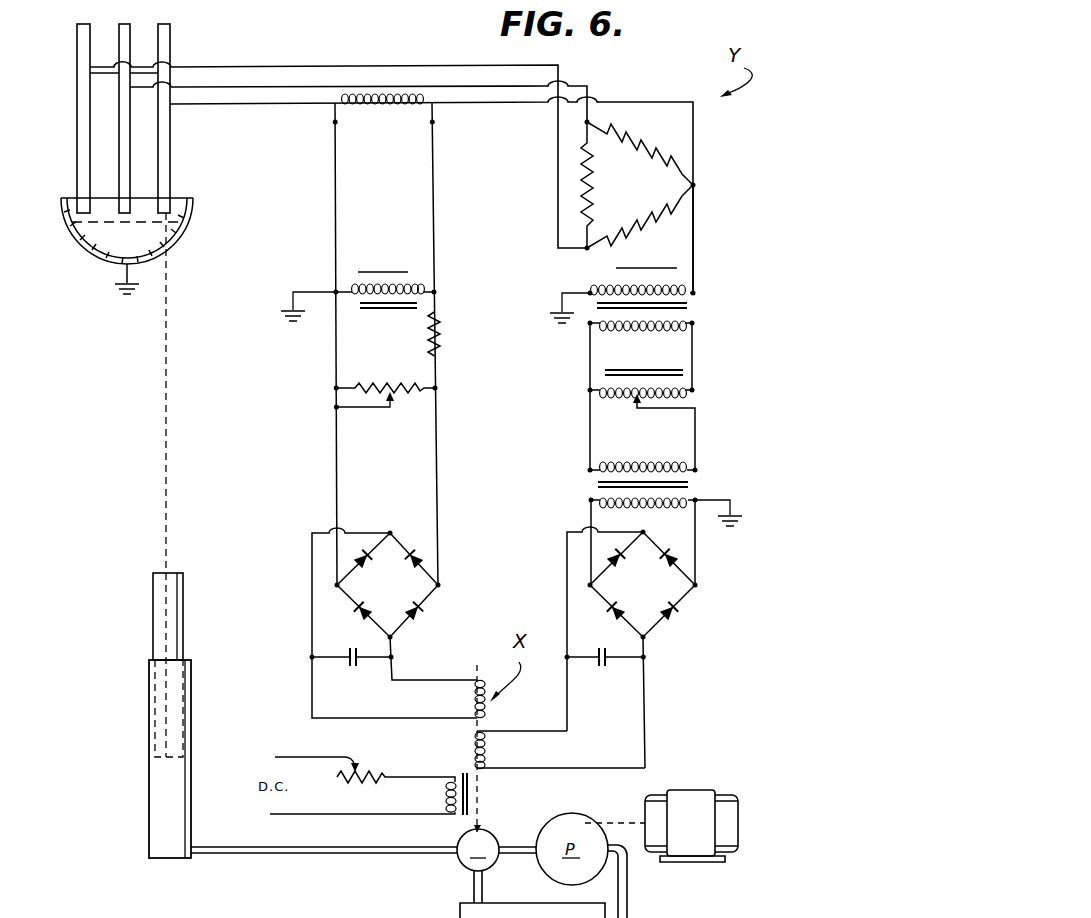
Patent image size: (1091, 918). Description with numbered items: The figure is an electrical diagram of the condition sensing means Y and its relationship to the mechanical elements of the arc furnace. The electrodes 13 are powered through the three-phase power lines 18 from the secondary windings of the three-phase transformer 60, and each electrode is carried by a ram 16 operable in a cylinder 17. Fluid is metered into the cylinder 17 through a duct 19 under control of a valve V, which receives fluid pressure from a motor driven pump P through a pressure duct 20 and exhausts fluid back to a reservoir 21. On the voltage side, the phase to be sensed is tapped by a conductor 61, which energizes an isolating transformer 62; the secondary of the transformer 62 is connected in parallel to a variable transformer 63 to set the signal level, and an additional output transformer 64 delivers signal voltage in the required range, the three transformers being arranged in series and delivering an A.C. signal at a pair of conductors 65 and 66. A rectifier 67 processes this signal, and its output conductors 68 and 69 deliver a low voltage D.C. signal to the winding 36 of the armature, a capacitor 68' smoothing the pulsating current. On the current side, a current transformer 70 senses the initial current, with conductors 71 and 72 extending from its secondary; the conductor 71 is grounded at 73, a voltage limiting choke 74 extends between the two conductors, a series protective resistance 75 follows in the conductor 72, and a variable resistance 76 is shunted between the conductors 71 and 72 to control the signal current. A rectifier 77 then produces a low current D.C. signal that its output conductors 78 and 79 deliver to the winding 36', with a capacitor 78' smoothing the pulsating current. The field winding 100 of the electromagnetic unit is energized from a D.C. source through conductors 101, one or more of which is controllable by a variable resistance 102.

The electrodes 13 is at (77, 141).
The ram 16 is at (184, 638).
The cylinder 17 is at (192, 752).
The power lines 18 is at (237, 105).
The duct 19 is at (277, 855).
The pressure duct 20 is at (512, 843).
The reservoir 21 is at (532, 910).
The winding 36 is at (560, 750).
The winding 36' is at (455, 748).
The three-phase transformer 60 is at (636, 196).
The conductor 61 is at (694, 248).
The isolating transformer 62 is at (688, 304).
The variable transformer 63 is at (688, 394).
The output transformer 64 is at (693, 486).
The conductor 65 is at (590, 505).
The conductor 66 is at (695, 560).
The rectifier 67 is at (655, 596).
The output conductor 68 is at (585, 629).
The capacitor 68' is at (605, 682).
The output conductor 69 is at (646, 718).
The current transformer 70 is at (380, 107).
The conductor 71 is at (335, 194).
The conductor 72 is at (433, 208).
The ground 73 is at (283, 324).
The voltage limiting choke 74 is at (388, 310).
The series protective resistance 75 is at (441, 338).
The variable resistance 76 is at (392, 412).
The rectifier 77 is at (402, 597).
The output conductor 78 is at (372, 623).
The capacitor 78' is at (352, 679).
The output conductor 79 is at (395, 653).
The field winding 100 is at (453, 796).
The conductors 101 is at (394, 788).
The variable resistance 102 is at (366, 765).